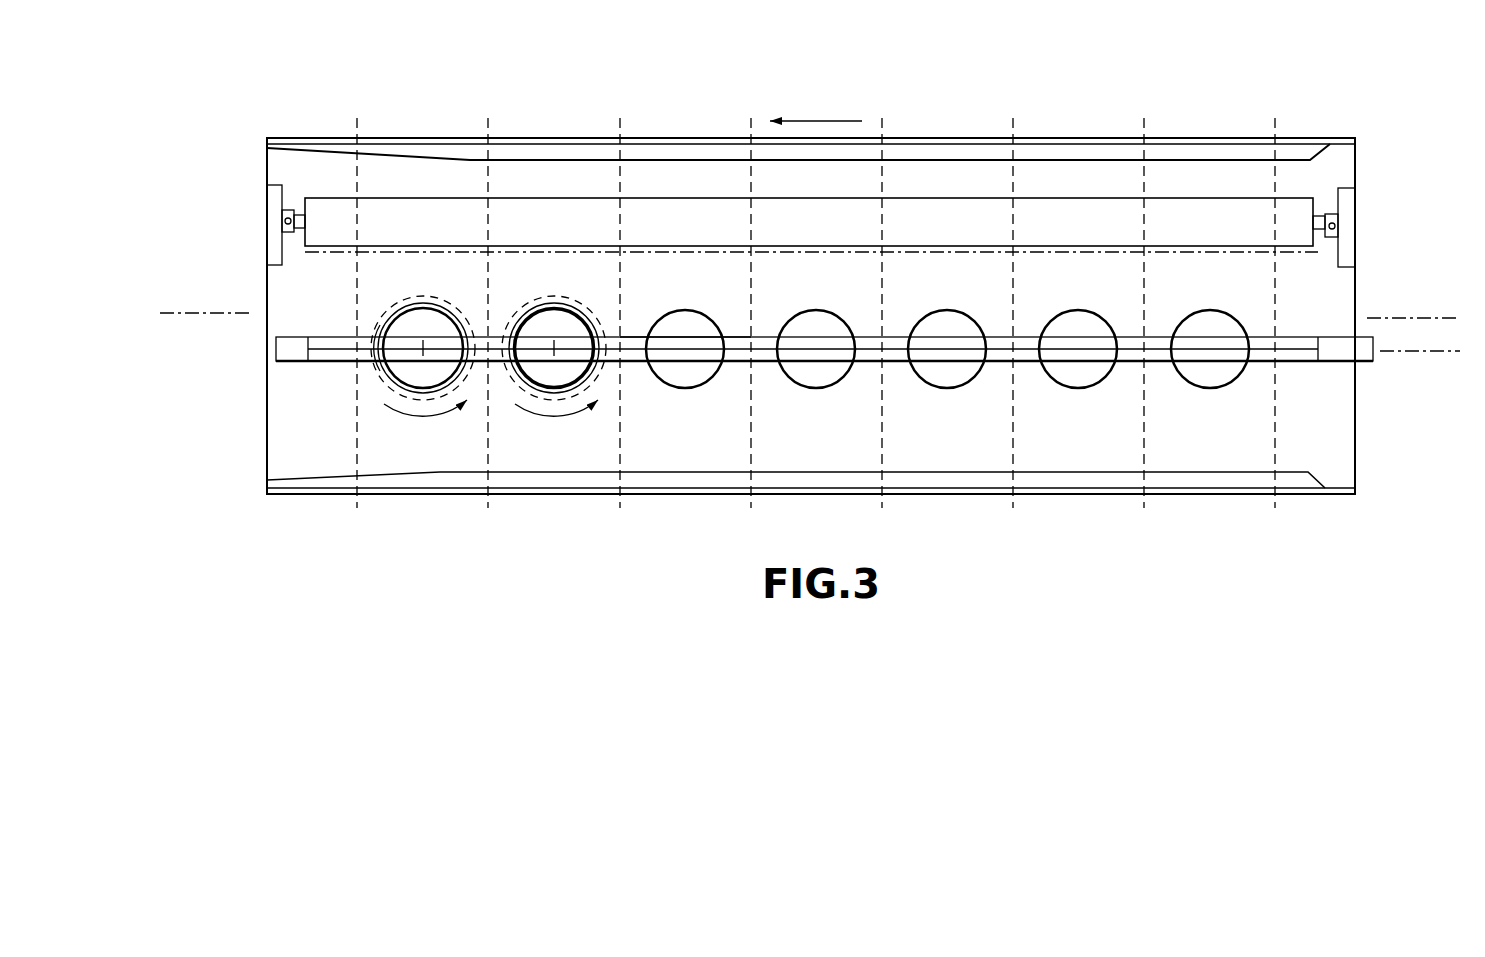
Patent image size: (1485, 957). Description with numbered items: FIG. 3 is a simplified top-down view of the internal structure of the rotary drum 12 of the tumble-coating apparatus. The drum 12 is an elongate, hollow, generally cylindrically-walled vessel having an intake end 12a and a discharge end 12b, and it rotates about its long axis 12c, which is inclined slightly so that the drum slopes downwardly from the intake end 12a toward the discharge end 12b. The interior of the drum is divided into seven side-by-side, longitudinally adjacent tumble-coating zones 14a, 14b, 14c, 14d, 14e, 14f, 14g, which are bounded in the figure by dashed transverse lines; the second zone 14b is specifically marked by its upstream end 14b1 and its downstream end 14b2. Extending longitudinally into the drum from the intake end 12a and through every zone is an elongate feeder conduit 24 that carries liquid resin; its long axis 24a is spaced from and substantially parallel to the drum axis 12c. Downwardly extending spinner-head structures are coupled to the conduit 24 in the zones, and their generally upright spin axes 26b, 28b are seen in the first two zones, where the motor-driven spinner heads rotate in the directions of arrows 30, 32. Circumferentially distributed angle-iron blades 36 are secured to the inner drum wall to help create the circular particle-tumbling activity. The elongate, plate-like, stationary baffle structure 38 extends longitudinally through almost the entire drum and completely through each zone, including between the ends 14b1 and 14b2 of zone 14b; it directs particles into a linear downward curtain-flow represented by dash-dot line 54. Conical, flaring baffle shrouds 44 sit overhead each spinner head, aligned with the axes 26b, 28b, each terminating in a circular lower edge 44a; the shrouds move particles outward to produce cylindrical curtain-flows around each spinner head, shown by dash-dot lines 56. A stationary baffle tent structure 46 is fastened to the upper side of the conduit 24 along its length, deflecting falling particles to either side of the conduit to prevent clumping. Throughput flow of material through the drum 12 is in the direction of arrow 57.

The rotary drum 12 is at (947, 137).
The intake end 12a is at (1355, 162).
The discharge end 12b is at (267, 150).
The long axis 12c is at (1433, 313).
The tumble-coating zone 14a is at (440, 445).
The tumble-coating zone 14b is at (571, 445).
The upstream end of zone 14b1 is at (618, 168).
The downstream end of zone 14b2 is at (487, 168).
The tumble-coating zone 14c is at (680, 445).
The tumble-coating zone 14d is at (810, 445).
The tumble-coating zone 14e is at (940, 445).
The tumble-coating zone 14f is at (1071, 445).
The tumble-coating zone 14g is at (1203, 445).
The feeder conduit 24 is at (1332, 337).
The long axis of conduit 24a is at (1420, 353).
The spinner-head axis 26b is at (425, 346).
The spinner-head axis 28b is at (556, 346).
The spin direction arrow 30 is at (420, 416).
The spin direction arrow 32 is at (551, 416).
The angle-iron blades 36 is at (694, 160).
The baffle structure 38 is at (412, 217).
The baffle shrouds 44 is at (395, 311).
The circular edge 44a is at (383, 330).
The baffle tent structure 46 is at (735, 336).
The linear curtain-flow 54 is at (780, 253).
The cylindrical curtain-flows 56 is at (383, 397).
The throughput flow arrow 57 is at (818, 121).